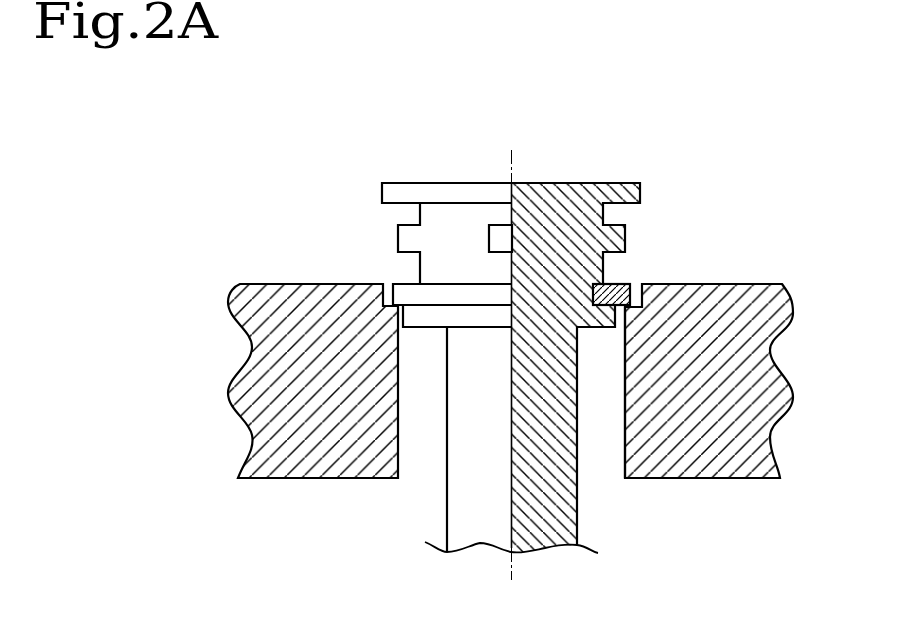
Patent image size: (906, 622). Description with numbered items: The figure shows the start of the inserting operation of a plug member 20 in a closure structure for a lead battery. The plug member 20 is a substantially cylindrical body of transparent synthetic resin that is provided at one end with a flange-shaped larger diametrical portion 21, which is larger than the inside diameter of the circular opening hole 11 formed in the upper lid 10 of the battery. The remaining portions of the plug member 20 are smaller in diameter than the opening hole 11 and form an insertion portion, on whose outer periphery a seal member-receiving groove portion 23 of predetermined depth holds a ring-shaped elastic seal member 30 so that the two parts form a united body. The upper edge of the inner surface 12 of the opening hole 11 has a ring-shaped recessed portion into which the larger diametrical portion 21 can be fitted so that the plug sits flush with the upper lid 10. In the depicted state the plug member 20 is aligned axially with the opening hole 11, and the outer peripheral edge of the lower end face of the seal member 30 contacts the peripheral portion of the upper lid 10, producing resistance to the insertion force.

The upper lid 10 is at (762, 284).
The opening hole 11 is at (417, 378).
The inner surface 12 is at (623, 455).
The plug member 20 is at (452, 505).
The larger diametrical portion 21 is at (403, 183).
The seal member-receiving groove portion 23 is at (620, 285).
The seal member 30 is at (405, 287).